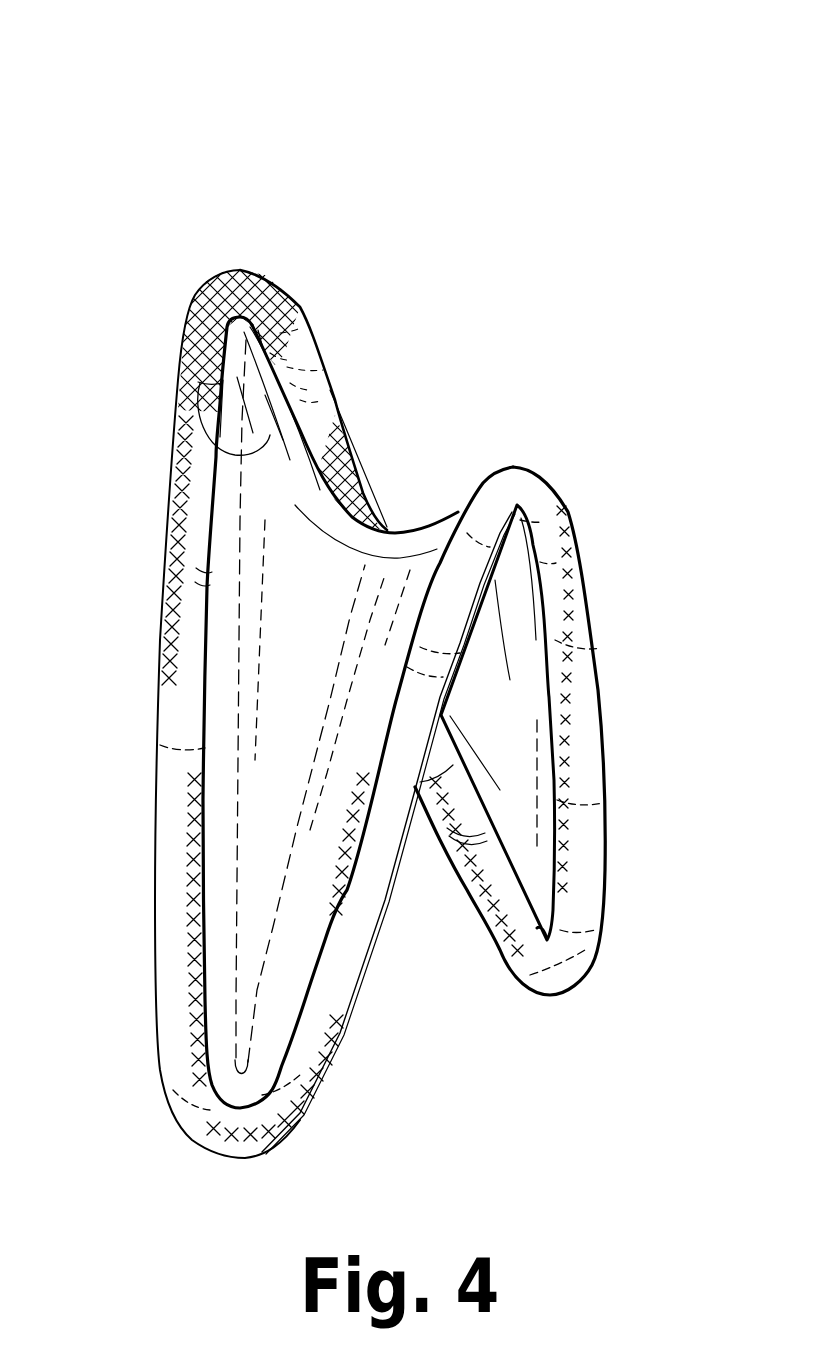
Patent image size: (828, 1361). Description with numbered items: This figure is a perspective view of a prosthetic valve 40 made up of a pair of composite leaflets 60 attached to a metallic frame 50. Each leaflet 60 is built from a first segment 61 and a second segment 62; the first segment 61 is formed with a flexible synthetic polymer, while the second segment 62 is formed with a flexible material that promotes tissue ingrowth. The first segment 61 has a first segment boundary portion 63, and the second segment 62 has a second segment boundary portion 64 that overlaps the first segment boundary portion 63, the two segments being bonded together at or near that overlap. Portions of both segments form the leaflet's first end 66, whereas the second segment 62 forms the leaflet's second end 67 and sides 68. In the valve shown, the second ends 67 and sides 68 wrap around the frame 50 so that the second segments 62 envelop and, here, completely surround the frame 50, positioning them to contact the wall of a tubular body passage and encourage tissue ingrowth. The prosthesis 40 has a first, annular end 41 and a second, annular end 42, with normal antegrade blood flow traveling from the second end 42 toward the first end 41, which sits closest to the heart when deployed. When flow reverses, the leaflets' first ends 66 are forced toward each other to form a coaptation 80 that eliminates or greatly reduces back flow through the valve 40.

The prosthetic valve 40 is at (245, 60).
The first annular end 41 is at (533, 470).
The second annular end 42 is at (267, 1150).
The metallic frame 50 is at (583, 580).
The medical valve leaflet 60 is at (287, 980).
The first segment 61 is at (243, 926).
The second segment 62 is at (167, 872).
The first segment boundary portion 63 is at (207, 700).
The second segment boundary portion 64 is at (210, 557).
The first end 66 is at (407, 530).
The second end 67 is at (545, 948).
The sides 68 is at (540, 660).
The coaptation 80 is at (257, 444).